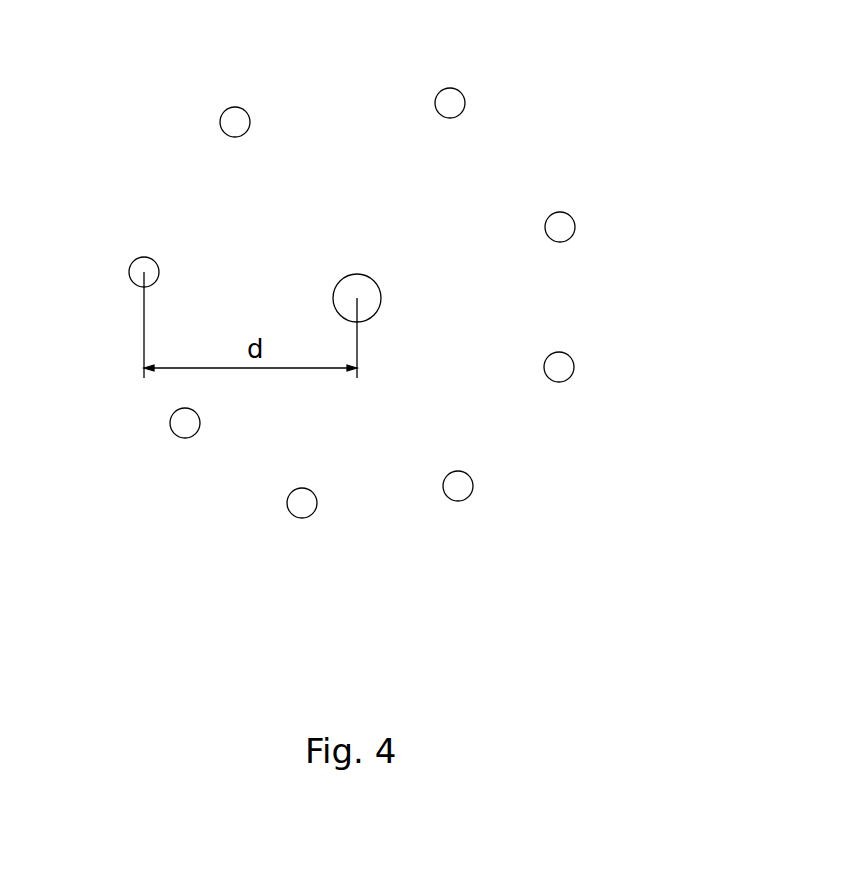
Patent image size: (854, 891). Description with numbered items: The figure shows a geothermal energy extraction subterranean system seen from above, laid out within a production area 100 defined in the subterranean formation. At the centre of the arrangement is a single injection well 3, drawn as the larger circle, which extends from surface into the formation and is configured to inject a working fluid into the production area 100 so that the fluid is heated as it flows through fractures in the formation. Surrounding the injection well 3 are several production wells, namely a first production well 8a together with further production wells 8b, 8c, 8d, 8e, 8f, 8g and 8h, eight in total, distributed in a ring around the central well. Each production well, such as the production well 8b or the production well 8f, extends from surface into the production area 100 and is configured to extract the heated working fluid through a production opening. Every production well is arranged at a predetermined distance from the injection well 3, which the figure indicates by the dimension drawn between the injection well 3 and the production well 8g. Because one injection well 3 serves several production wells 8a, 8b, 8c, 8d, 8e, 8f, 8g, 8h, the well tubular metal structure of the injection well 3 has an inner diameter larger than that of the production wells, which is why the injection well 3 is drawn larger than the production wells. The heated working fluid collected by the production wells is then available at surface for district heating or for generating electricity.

The production area 100 is at (372, 216).
The injection well 3 is at (370, 302).
The first production well 8a is at (455, 100).
The production well 8b is at (565, 228).
The production well 8c is at (563, 370).
The production well 8d is at (460, 490).
The production well 8e is at (298, 508).
The production well 8f is at (180, 428).
The production well 8g is at (140, 268).
The production well 8h is at (235, 122).